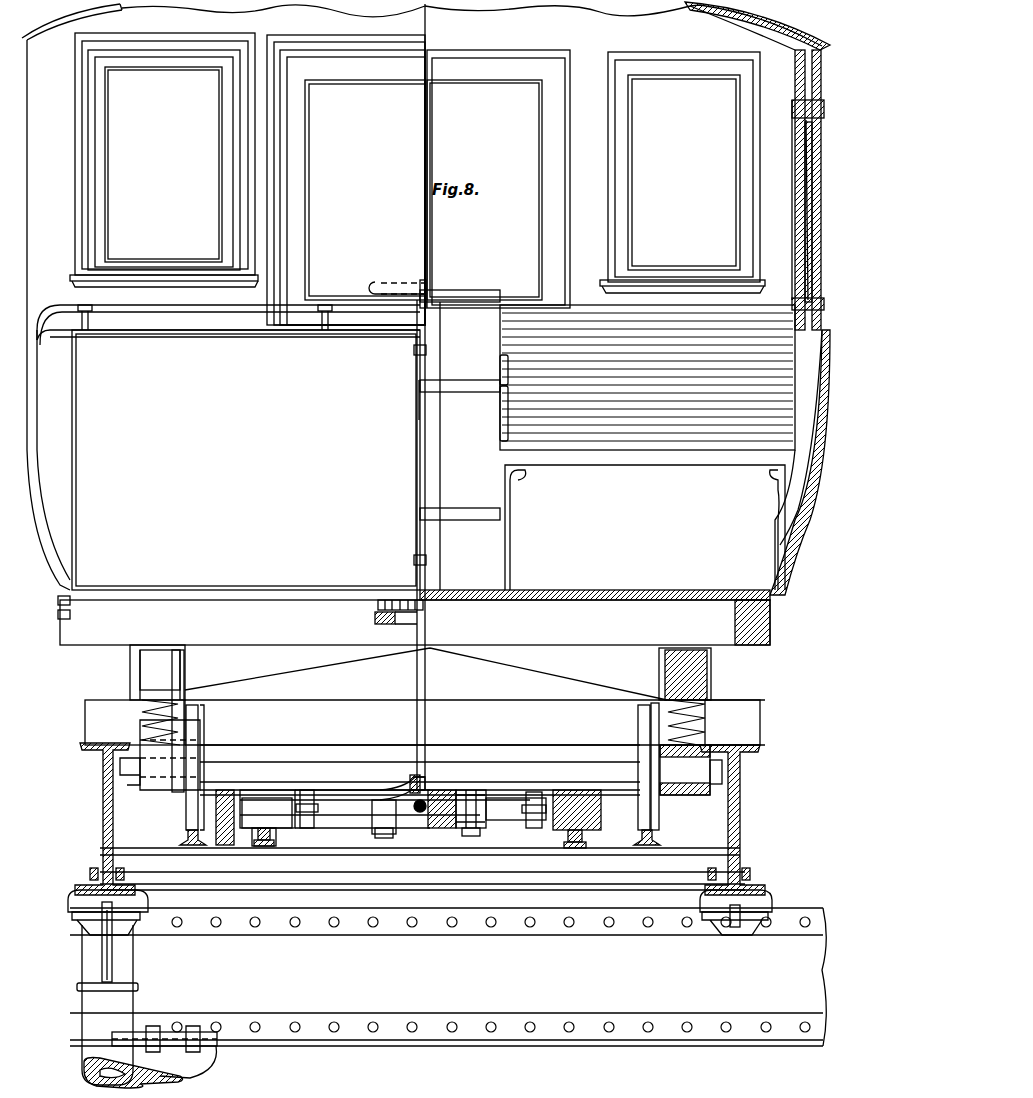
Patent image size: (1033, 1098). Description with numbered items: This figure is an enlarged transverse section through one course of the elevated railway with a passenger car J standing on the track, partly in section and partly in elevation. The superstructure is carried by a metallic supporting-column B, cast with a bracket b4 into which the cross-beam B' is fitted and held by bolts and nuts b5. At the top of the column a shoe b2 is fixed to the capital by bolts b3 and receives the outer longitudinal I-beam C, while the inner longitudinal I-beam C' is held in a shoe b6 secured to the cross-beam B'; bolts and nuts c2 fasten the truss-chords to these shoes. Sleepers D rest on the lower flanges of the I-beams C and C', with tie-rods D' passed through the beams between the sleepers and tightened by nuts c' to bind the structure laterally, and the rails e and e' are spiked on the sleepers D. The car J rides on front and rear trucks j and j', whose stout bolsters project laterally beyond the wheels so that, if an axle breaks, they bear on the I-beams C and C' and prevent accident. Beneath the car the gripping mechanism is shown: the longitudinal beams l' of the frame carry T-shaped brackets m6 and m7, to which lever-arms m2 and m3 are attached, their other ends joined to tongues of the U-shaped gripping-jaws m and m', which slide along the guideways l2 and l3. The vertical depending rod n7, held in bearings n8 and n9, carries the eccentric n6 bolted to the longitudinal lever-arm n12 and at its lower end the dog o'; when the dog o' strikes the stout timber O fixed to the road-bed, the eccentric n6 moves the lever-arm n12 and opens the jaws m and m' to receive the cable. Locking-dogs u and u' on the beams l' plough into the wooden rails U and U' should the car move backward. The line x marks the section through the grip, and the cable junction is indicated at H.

The passenger car J is at (228, 447).
The bearing n9 is at (414, 349).
The vertical depending rod n7 is at (417, 392).
The bearing n8 is at (414, 560).
The eccentric n6 is at (377, 604).
The longitudinal lever-arm n12 is at (417, 624).
The front truck j is at (475, 696).
The rear truck j' is at (465, 695).
The section line x is at (420, 720).
The outer longitudinal I-beam C is at (98, 819).
The inner longitudinal I-beam C' is at (733, 820).
The longitudinal beam l' is at (431, 785).
The dog o' is at (267, 813).
The longitudinal timber O is at (233, 820).
The locking-dog u is at (274, 837).
The wooden rail U is at (275, 842).
The T-shaped bracket m6 is at (308, 816).
The lever-arm m2 is at (340, 815).
The longitudinal guideway l2 is at (384, 828).
The gripping-jaw m is at (403, 842).
The pipe joint H is at (425, 785).
The gripping-jaw m' is at (457, 821).
The longitudinal guideway l3 is at (466, 830).
The lever-arm m3 is at (516, 820).
The T-shaped bracket m7 is at (534, 819).
The locking-dog u' is at (586, 838).
The wooden rail U' is at (547, 848).
The rail e is at (182, 840).
The rail e' is at (657, 840).
The nut c' is at (419, 853).
The bolt b3 is at (90, 872).
The shoe b2 is at (78, 888).
The shoe b6 is at (76, 925).
The bolt and nut c2 is at (112, 915).
The cross-beam B' is at (448, 977).
The sleeper D is at (353, 923).
The tie-rod D' is at (511, 918).
The supporting-column B is at (114, 1006).
The bolts and nuts b5 is at (160, 1028).
The bracket b4 is at (196, 1058).